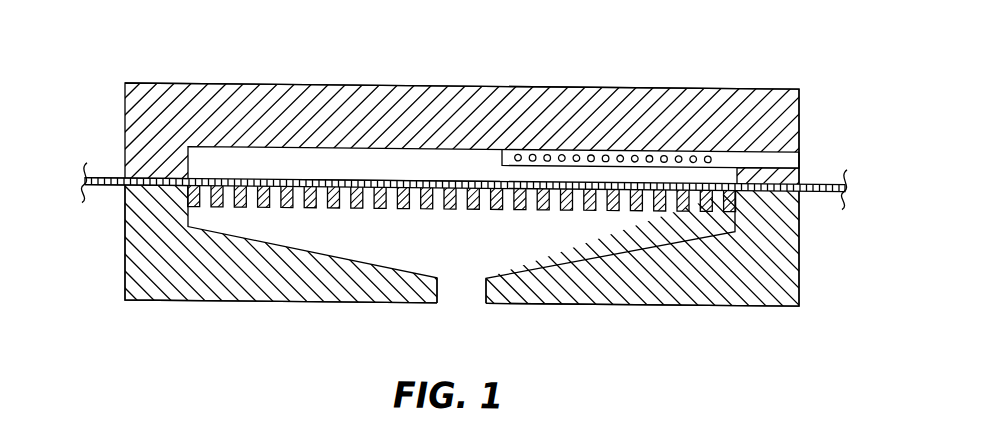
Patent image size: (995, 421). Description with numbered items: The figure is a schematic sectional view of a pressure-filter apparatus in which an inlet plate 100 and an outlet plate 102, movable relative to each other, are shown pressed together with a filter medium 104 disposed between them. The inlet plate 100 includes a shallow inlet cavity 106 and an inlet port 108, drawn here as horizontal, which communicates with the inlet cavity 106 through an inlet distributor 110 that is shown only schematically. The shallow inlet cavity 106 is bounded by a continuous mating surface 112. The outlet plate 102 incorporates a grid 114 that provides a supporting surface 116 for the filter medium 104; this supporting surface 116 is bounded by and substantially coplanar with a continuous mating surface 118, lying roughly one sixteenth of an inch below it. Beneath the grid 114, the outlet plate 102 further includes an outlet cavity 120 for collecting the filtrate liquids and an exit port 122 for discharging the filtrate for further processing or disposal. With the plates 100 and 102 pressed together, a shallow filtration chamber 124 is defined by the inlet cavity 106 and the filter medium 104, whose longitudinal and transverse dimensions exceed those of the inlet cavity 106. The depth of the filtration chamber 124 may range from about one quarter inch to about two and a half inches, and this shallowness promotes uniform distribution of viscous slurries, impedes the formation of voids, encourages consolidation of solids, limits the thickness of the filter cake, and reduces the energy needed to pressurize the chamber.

The inlet plate 100 is at (175, 83).
The outlet plate 102 is at (190, 300).
The filter medium 104 is at (820, 184).
The shallow inlet cavity 106 is at (188, 147).
The inlet port 108 is at (800, 151).
The inlet distributor 110 is at (602, 149).
The continuous mating surface 112 is at (142, 177).
The grid 114 is at (470, 205).
The supporting surface 116 is at (372, 179).
The continuous mating surface 118 is at (155, 187).
The outlet cavity 120 is at (325, 250).
The exit port 122 is at (483, 290).
The shallow filtration chamber 124 is at (323, 161).